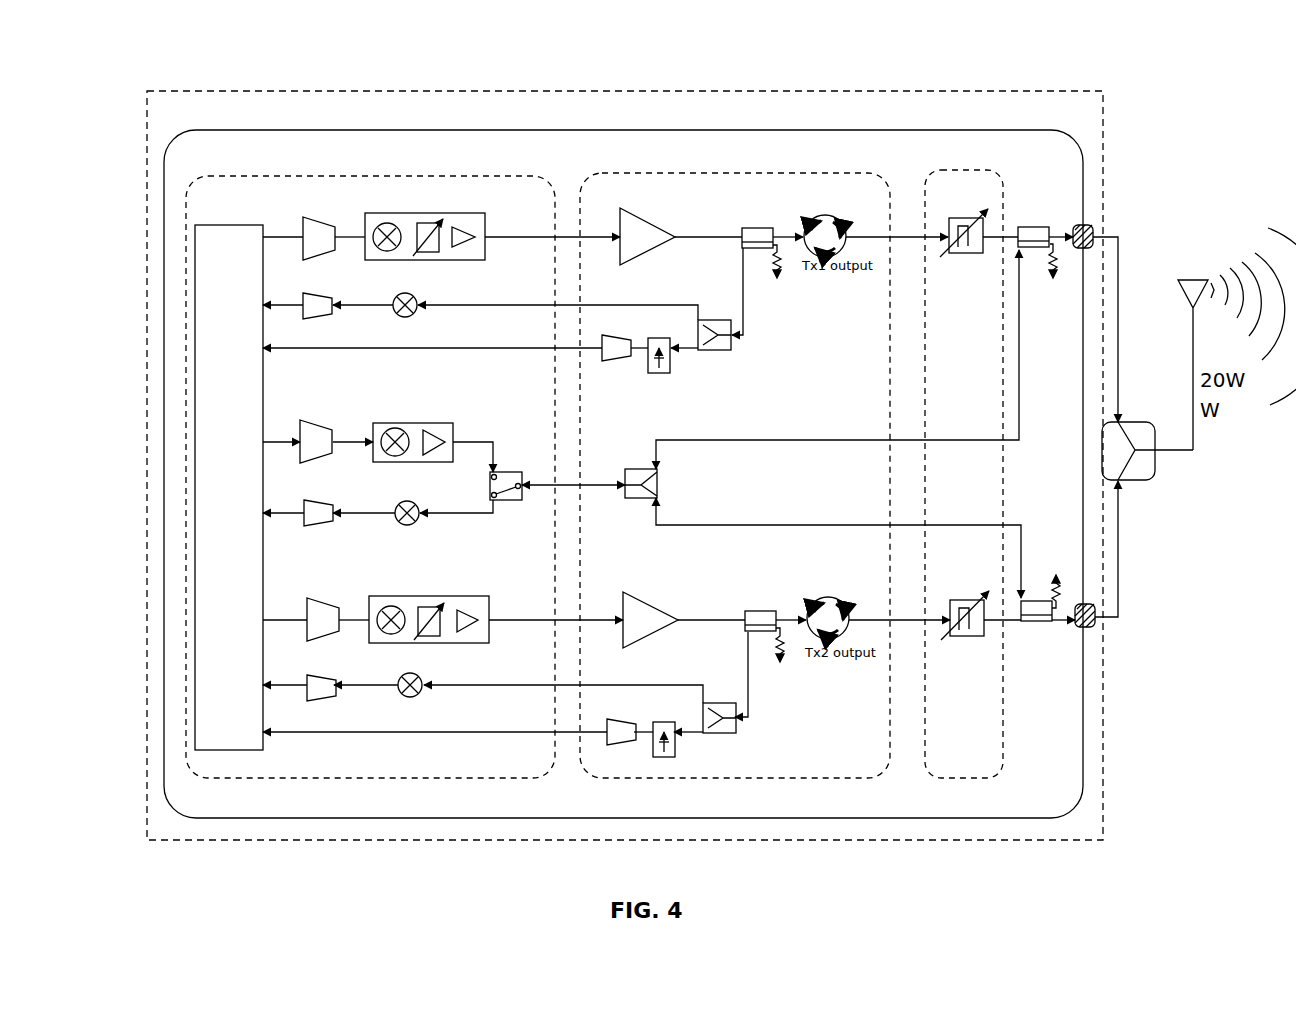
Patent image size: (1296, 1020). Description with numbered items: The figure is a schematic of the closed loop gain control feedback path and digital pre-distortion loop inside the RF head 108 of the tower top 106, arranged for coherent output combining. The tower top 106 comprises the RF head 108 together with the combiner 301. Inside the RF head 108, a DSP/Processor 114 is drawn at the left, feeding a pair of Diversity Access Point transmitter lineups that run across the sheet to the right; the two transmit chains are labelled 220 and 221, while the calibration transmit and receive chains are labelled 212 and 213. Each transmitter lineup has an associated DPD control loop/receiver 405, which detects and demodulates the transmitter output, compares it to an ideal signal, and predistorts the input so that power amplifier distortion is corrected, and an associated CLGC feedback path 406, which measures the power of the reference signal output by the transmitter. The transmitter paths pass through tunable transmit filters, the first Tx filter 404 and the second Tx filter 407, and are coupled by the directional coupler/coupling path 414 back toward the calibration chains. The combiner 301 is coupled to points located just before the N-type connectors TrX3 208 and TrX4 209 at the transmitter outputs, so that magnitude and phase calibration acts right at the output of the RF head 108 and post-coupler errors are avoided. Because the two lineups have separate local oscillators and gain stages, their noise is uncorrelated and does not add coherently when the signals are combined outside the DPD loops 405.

The tower top 106 is at (240, 58).
The RF head 108 is at (593, 126).
The DSP/Processor 114 is at (235, 472).
The first transmitter (Tx1) 220 is at (337, 216).
The second transmitter (Tx2) 221 is at (340, 594).
The calibration transmitter (Cal Tx) 212 is at (350, 421).
The calibration receiver (Cal Rx) 213 is at (339, 547).
The DPD control loop/receiver 405 is at (507, 302).
The CLGC feedback path 406 is at (522, 347).
The first Tx filter 404 is at (977, 284).
The second Tx filter 407 is at (980, 674).
The directional coupler/coupling path 414 is at (625, 459).
The TrX3 connector 208 is at (1160, 247).
The TrX4 connector 209 is at (1164, 622).
The combiner 301 is at (1175, 501).